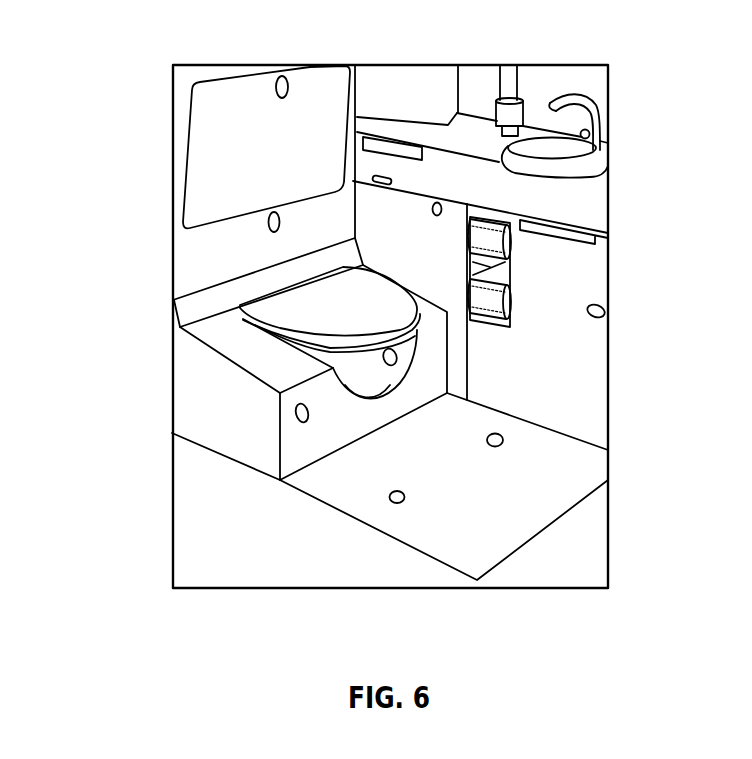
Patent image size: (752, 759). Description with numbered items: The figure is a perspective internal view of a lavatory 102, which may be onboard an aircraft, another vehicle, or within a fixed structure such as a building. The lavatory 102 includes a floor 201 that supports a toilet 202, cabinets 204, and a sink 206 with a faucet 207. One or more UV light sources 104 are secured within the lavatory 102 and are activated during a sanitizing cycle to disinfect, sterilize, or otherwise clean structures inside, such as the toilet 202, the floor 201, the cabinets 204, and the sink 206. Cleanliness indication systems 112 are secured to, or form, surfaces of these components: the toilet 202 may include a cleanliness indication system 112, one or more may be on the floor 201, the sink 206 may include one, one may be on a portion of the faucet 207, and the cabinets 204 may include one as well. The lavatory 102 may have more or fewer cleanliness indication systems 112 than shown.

The lavatory 102 is at (129, 78).
The UV light source 104 is at (392, 137).
The cleanliness indication system 112 is at (435, 178).
The floor 201 is at (545, 498).
The toilet 202 is at (302, 308).
The cabinets 204 is at (562, 271).
The sink 206 is at (537, 148).
The faucet 207 is at (590, 97).